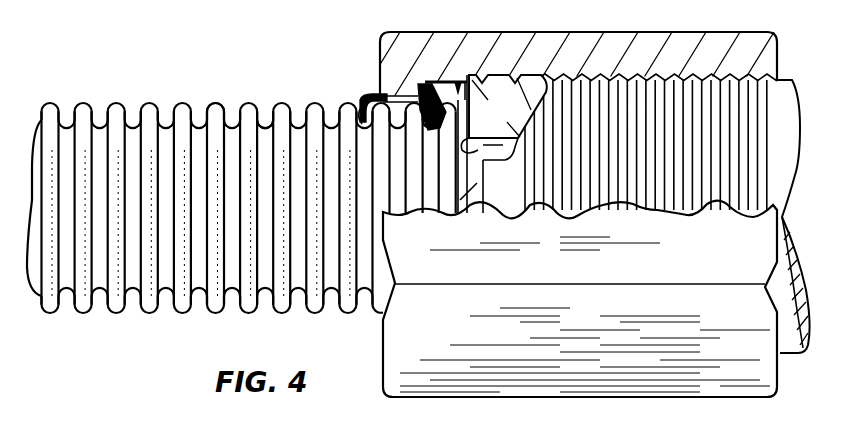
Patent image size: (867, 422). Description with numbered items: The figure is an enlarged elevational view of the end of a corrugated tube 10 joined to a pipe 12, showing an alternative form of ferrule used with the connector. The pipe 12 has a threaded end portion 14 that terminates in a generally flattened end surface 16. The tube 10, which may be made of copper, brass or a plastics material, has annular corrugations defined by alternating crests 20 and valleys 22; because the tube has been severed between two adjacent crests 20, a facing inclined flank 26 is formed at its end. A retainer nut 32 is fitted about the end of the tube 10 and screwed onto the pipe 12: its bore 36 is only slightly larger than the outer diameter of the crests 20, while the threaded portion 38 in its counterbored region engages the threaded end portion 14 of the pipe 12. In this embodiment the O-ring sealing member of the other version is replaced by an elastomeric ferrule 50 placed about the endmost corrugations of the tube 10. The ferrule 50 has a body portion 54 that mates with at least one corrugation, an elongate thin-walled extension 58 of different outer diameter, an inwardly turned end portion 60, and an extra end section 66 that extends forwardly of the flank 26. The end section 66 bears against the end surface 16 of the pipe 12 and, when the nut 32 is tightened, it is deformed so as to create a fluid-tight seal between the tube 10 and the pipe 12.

The tube 10 is at (205, 84).
The pipe 12 is at (784, 97).
The threaded end portion 14 is at (640, 90).
The flattened end surface 16 is at (482, 135).
The crests 20 is at (218, 108).
The valleys 22 is at (264, 127).
The inclined flank 26 is at (470, 192).
The retainer nut 32 is at (540, 44).
The bore 36 is at (383, 95).
The threaded portion 38 is at (590, 77).
The ferrule 50 is at (392, 75).
The body portion 54 is at (418, 80).
The extension 58 is at (368, 96).
The inwardly turned end portion 60 is at (361, 107).
The end section 66 is at (463, 98).